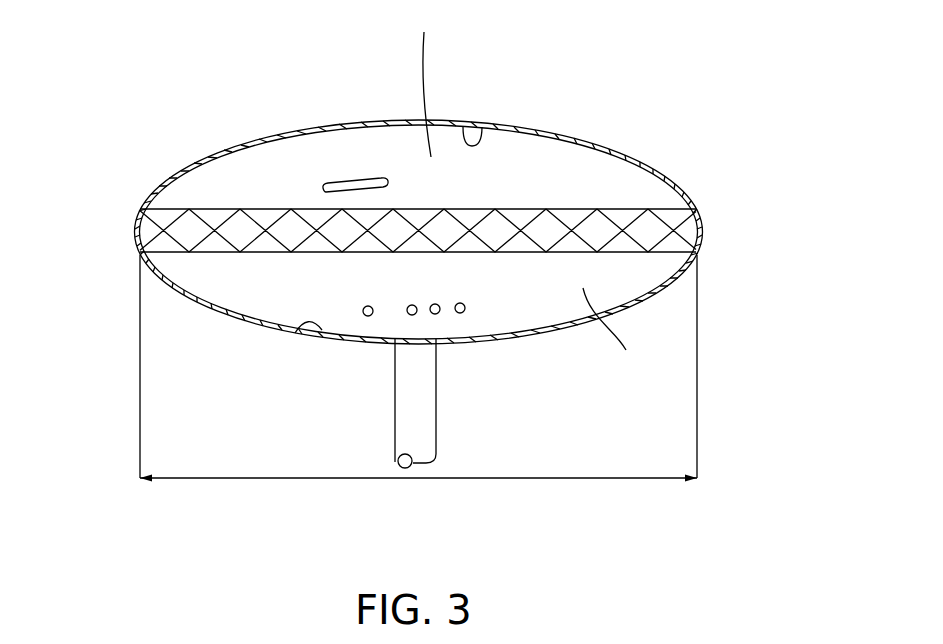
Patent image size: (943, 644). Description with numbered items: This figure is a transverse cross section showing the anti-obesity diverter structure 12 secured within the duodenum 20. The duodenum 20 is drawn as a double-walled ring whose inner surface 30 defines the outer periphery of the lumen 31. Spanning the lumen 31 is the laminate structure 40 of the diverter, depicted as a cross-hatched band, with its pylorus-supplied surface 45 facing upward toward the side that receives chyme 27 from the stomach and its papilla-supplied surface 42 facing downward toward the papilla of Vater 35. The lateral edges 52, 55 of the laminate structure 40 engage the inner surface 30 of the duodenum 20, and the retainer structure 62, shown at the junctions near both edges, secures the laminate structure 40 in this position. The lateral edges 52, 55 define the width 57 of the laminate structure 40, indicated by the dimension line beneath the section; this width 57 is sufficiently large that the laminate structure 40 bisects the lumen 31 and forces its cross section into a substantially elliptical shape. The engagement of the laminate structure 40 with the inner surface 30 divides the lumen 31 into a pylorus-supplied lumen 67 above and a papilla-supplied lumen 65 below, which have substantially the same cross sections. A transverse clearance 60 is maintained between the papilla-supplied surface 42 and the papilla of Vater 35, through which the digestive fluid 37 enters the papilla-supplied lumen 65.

The anti-obesity diverter structure 12 is at (489, 264).
The duodenum 20 is at (535, 345).
The chyme 27 is at (330, 183).
The inner surface 30 is at (480, 128).
The lumen 31 is at (532, 190).
The papilla of Vater 35 is at (400, 467).
The digestive fluid 37 is at (435, 315).
The laminate structure 40 is at (557, 200).
The papilla-supplied surface 42 is at (274, 253).
The pylorus-supplied surface 45 is at (245, 208).
The lateral edge 52 is at (703, 238).
The lateral edge 55 is at (135, 243).
The width 57 is at (415, 480).
The transverse clearance 60 is at (413, 280).
The retainer structure 62 is at (128, 208).
The papilla-supplied lumen 65 is at (208, 272).
The pylorus-supplied lumen 67 is at (523, 185).